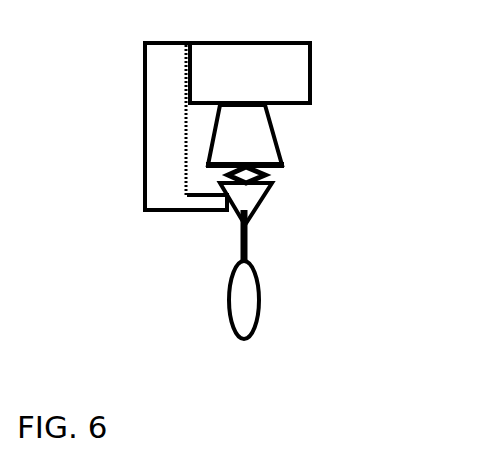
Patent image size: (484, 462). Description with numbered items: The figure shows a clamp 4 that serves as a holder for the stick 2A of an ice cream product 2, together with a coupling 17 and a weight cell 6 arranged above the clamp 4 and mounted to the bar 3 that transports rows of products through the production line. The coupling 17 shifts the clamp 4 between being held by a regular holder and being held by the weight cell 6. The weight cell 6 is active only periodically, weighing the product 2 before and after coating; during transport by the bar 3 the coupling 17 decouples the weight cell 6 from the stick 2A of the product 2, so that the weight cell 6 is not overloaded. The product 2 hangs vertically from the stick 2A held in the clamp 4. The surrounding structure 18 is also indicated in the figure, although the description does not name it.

The ice cream product 2 is at (279, 298).
The stick 2A is at (267, 252).
The bar 3 is at (277, 75).
The clamp 4 is at (285, 200).
The weight cell 6 is at (273, 130).
The coupling 17 is at (293, 173).
The holder / housing bracket 18 is at (167, 158).